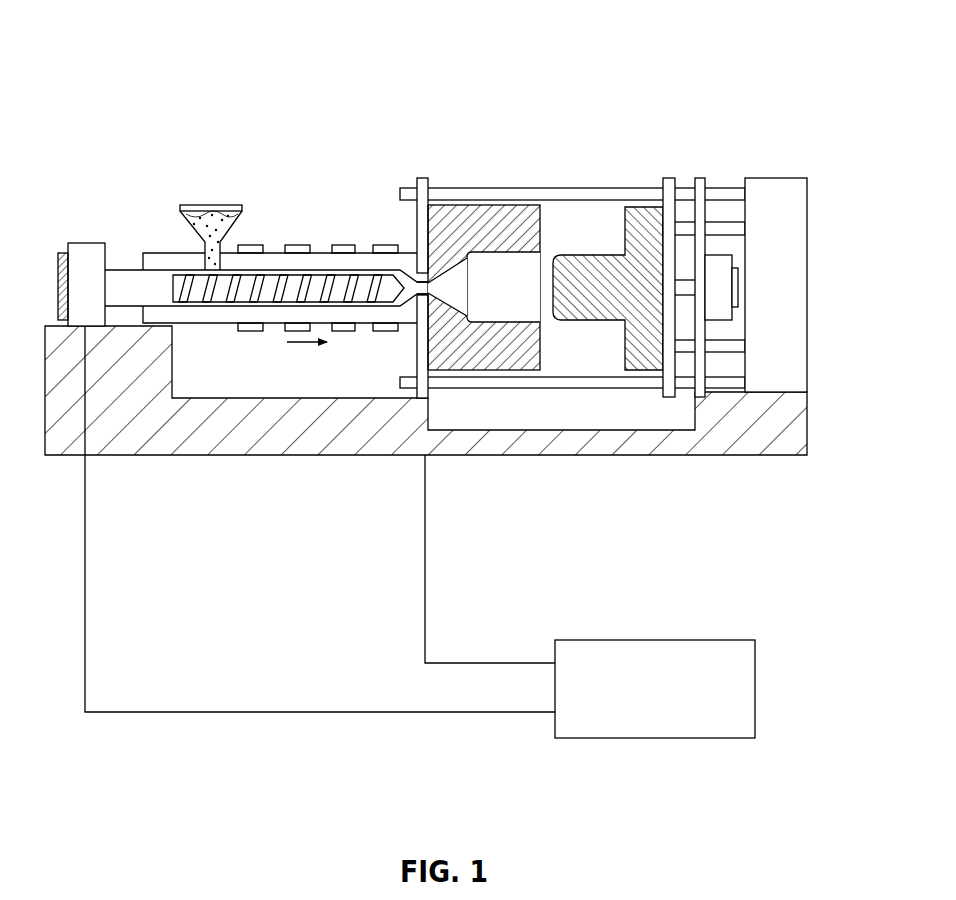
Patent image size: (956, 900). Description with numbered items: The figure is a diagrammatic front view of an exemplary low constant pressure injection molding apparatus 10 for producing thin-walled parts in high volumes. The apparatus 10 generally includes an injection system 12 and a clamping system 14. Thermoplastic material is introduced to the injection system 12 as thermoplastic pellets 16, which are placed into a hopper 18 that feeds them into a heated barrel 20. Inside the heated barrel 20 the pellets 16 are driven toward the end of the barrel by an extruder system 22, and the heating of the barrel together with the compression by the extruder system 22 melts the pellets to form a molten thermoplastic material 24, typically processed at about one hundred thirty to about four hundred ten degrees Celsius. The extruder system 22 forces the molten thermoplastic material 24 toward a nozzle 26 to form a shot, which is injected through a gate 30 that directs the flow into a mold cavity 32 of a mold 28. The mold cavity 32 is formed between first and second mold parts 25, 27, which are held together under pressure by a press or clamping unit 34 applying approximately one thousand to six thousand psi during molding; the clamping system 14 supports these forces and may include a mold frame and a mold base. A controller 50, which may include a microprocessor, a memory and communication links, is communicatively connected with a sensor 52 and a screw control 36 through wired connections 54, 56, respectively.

The low constant pressure injection molding apparatus 10 is at (394, 62).
The injection system 12 is at (258, 365).
The clamping system 14 is at (560, 457).
The thermoplastic pellets 16 is at (185, 204).
The hopper 18 is at (218, 205).
The heated barrel 20 is at (318, 246).
The extruder system 22 is at (222, 292).
The molten thermoplastic material 24 is at (370, 270).
The first mold part 25 is at (545, 278).
The nozzle 26 is at (484, 256).
The second mold part 27 is at (608, 317).
The mold 28 is at (540, 195).
The gate 30 is at (468, 262).
The mold cavity 32 is at (505, 262).
The clamping unit 34 is at (748, 170).
The screw control 36 is at (85, 243).
The controller 50 is at (715, 639).
The sensor 52 is at (418, 307).
The wired connection 54 is at (493, 662).
The wired connection 56 is at (312, 711).